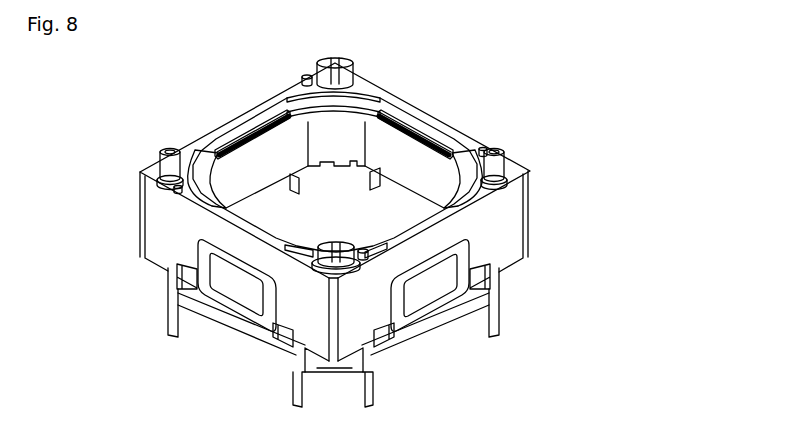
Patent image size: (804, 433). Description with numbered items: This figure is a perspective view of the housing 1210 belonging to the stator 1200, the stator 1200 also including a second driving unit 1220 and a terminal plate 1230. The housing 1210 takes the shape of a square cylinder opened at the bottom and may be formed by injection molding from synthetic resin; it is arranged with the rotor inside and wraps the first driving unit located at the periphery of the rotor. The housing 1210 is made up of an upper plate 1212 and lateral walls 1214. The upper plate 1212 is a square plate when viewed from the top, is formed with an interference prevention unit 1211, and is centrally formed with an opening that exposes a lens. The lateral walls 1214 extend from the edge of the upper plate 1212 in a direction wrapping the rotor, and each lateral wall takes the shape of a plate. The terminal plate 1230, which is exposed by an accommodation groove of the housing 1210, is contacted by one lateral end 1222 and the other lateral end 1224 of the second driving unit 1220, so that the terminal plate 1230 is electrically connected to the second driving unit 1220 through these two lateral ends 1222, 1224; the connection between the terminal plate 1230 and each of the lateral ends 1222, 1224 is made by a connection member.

The stator 1200 is at (478, 120).
The housing 1210 is at (147, 232).
The interference prevention unit 1211 is at (200, 184).
The upper plate 1212 is at (143, 166).
The lateral walls 1214 is at (507, 228).
The second driving unit 1220 is at (467, 263).
The one lateral end 1222 is at (178, 283).
The other lateral end 1224 is at (277, 333).
The terminal plate 1230 is at (375, 397).